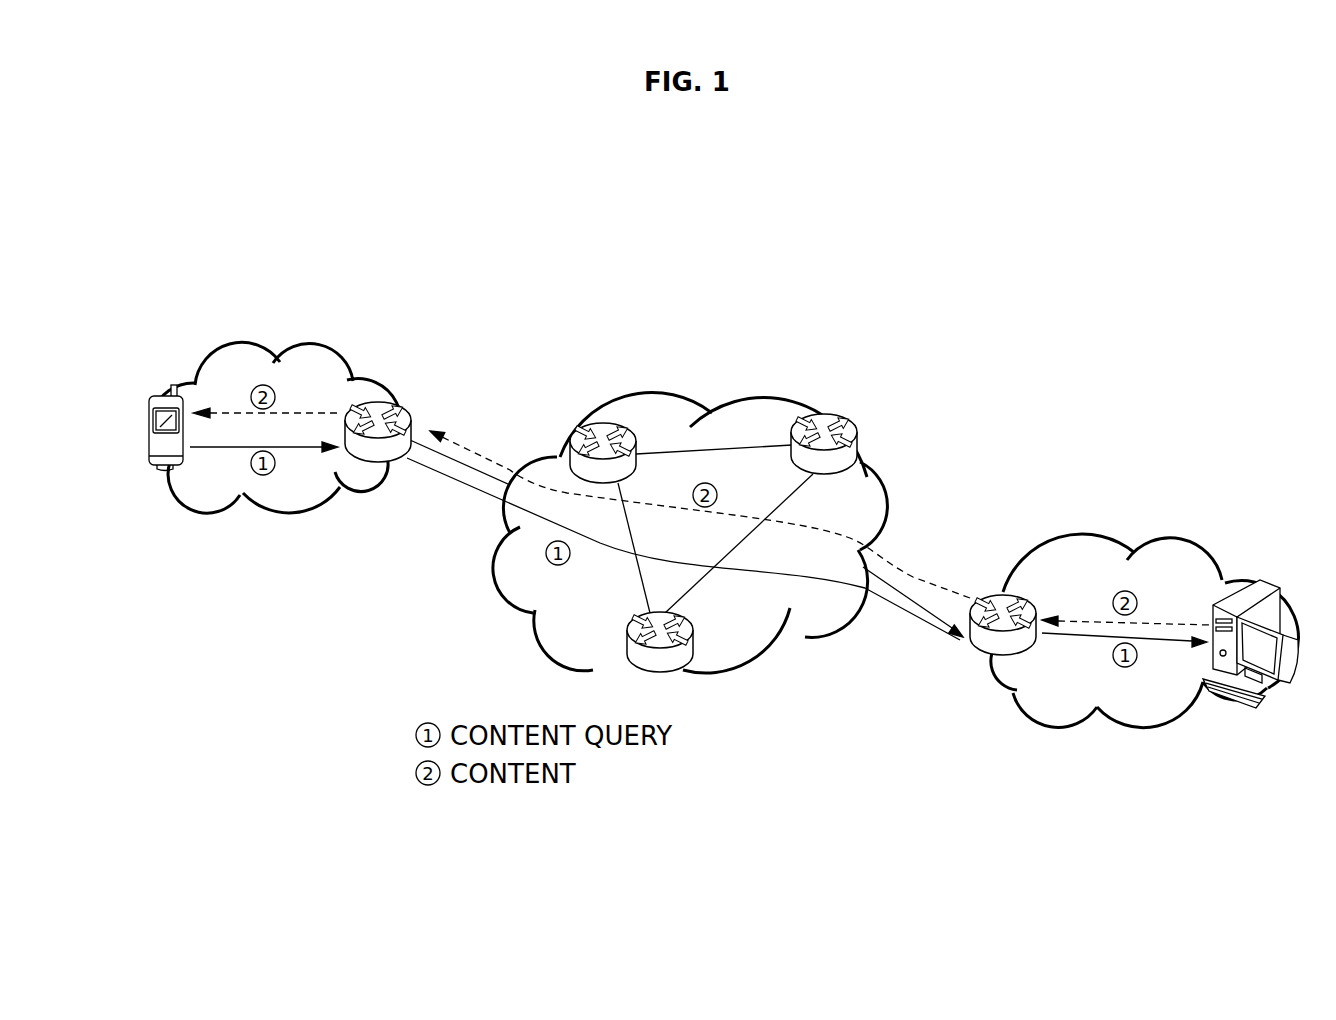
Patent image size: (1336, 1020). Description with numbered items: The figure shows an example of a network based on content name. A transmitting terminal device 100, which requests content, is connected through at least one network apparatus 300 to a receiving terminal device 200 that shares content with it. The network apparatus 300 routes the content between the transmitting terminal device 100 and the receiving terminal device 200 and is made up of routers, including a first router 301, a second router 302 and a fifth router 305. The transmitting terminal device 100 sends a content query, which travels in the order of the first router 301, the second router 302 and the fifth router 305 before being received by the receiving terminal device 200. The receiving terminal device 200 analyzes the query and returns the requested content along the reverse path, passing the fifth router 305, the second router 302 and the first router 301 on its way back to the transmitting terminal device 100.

The transmitting terminal device 100 is at (168, 392).
The receiving terminal device 200 is at (1245, 595).
The network apparatus 300 is at (808, 276).
The first router 301 is at (388, 403).
The second router 302 is at (660, 613).
The fifth router 305 is at (1002, 598).